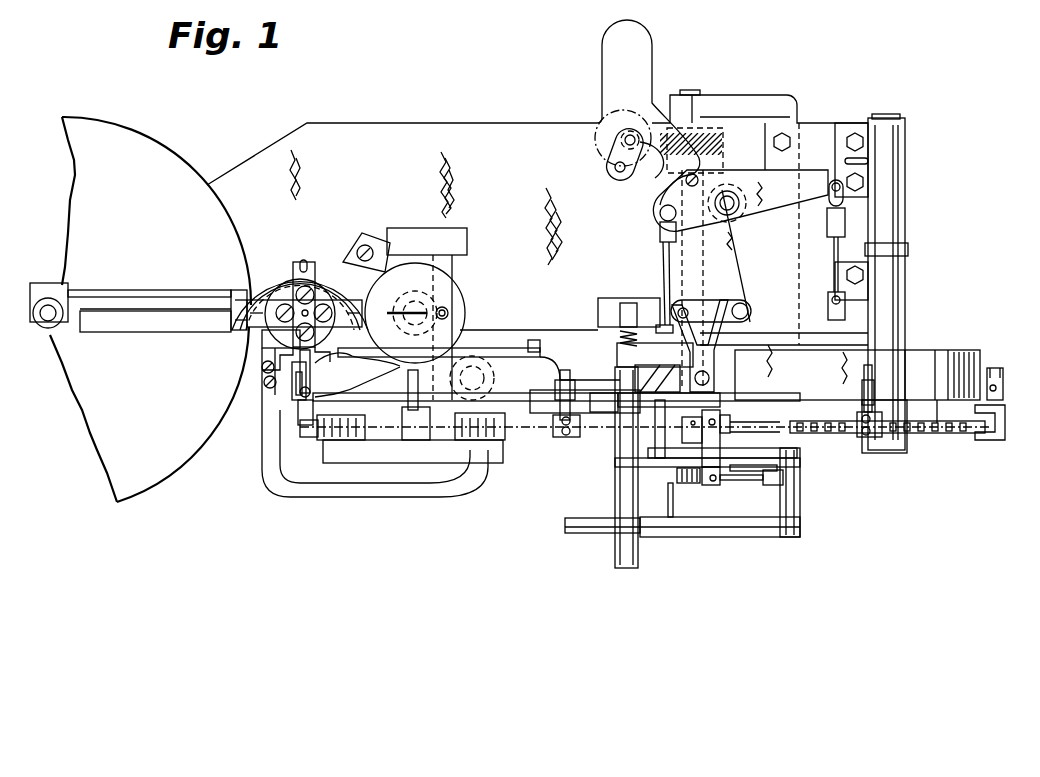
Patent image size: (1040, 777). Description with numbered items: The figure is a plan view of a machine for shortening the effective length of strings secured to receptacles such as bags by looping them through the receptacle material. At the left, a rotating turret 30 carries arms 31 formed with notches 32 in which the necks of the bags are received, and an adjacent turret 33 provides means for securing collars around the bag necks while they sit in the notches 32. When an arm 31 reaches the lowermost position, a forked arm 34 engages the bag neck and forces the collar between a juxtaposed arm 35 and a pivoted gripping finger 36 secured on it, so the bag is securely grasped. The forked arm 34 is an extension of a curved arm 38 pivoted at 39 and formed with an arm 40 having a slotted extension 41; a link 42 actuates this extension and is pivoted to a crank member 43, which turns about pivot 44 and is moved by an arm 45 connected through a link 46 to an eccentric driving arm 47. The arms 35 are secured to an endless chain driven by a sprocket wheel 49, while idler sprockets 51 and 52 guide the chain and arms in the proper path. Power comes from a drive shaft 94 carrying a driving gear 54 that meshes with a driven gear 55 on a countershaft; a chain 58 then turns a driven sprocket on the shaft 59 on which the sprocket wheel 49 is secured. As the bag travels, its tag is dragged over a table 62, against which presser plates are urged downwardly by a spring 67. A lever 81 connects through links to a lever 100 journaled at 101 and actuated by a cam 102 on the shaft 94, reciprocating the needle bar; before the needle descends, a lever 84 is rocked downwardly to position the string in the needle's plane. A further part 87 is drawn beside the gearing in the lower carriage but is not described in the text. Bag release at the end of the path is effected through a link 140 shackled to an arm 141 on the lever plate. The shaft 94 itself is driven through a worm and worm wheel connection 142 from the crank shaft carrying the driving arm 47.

The rotating turret 30 is at (285, 297).
The arm 31 is at (300, 267).
The notch 32 is at (303, 262).
The turret 33 is at (390, 290).
The forked arm 34 is at (262, 360).
The arm 35 is at (302, 415).
The pivoted gripping finger 36 is at (300, 380).
The curved arm 38 is at (393, 487).
The pivot 39 is at (475, 410).
The arm 40 is at (537, 343).
The slotted extension 41 is at (603, 342).
The link 42 is at (657, 272).
The crank member 43 is at (680, 187).
The pivot 44 is at (727, 200).
The arm 45 is at (657, 127).
The link 46 is at (615, 165).
The eccentric driving arm 47 is at (625, 140).
The sprocket wheel 49 is at (962, 427).
The idler sprocket 51 is at (320, 420).
The idler sprocket 52 is at (497, 437).
The driving gear 54 is at (752, 485).
The driven gear 55 is at (690, 483).
The chain 58 is at (937, 423).
The shaft 59 is at (885, 212).
The table 62 is at (530, 410).
The spring 67 is at (397, 337).
The lever 81 is at (637, 412).
The lever 84 is at (661, 470).
The block 87 is at (722, 485).
The drive shaft 94 is at (695, 95).
The lever 100 is at (597, 535).
The journal 101 is at (795, 520).
The cam 102 is at (653, 523).
The link 140 is at (842, 247).
The arm 141 is at (802, 180).
The worm and worm wheel connection 142 is at (632, 187).